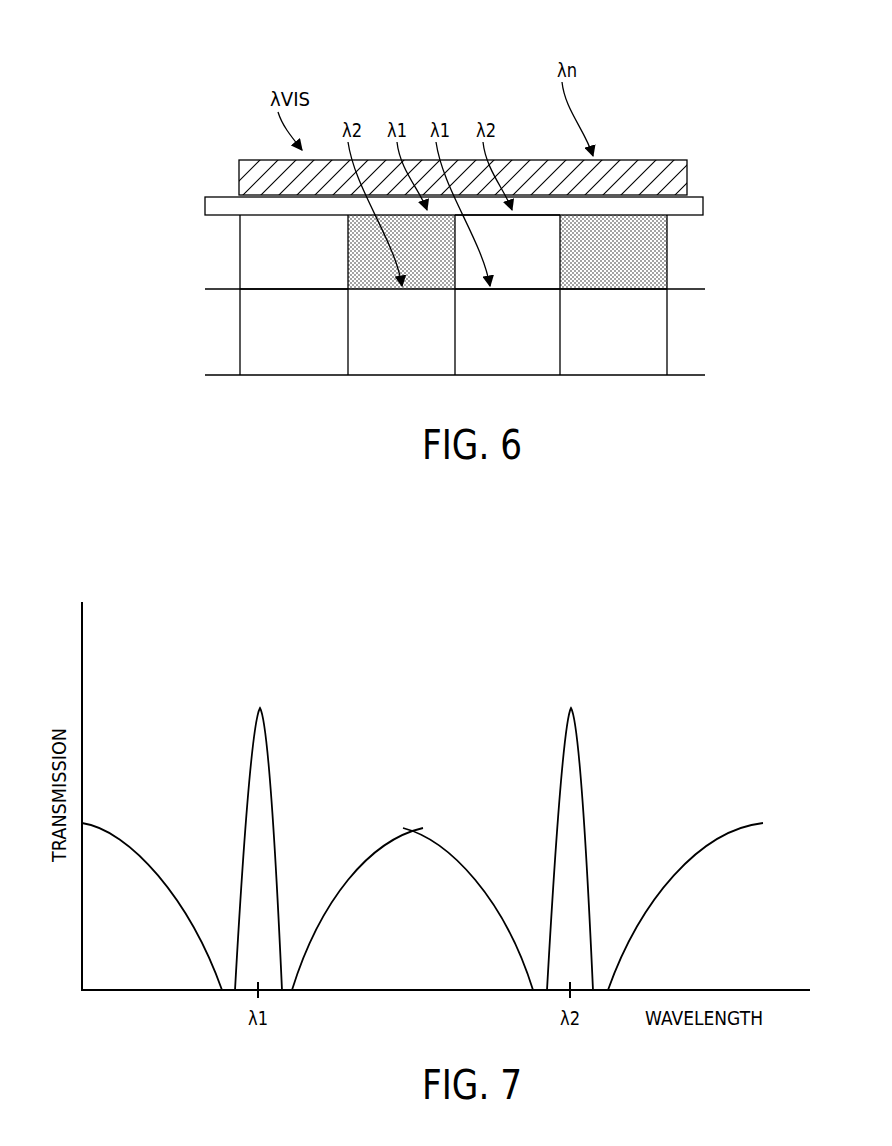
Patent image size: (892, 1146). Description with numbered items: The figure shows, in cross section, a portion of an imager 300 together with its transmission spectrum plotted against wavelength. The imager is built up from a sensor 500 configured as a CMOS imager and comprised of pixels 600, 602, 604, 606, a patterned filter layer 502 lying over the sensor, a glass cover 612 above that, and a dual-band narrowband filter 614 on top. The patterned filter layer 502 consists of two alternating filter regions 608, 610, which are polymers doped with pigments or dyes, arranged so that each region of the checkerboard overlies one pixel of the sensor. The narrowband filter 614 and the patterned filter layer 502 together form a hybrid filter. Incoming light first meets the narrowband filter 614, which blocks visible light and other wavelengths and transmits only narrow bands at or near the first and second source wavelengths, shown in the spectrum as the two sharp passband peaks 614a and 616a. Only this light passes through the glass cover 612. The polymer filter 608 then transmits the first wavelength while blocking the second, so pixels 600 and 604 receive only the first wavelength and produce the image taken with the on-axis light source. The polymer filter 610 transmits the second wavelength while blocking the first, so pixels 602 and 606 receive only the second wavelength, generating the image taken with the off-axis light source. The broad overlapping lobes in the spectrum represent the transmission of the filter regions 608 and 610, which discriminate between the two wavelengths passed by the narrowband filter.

In FIG. 6, the image sensor assembly 300 is at (651, 76).
In FIG. 6, the sensor 500 is at (202, 337).
In FIG. 6, the patterned filter layer 502 is at (202, 254).
In FIG. 6, the pixel 600 is at (281, 338).
In FIG. 6, the pixel 602 is at (387, 338).
In FIG. 6, the pixel 604 is at (491, 338).
In FIG. 6, the pixel 606 is at (596, 338).
In FIG. 6, the filter region 608 is at (491, 261).
In FIG. 7, the filter region 608 is at (459, 866).
In FIG. 6, the filter region 610 is at (596, 261).
In FIG. 7, the filter region 610 is at (142, 857).
In FIG. 6, the glass cover 612 is at (204, 192).
In FIG. 6, the dual-band narrowband filter 614 is at (246, 158).
In FIG. 7, the first passband peak 614a is at (290, 716).
In FIG. 7, the second passband peak 616a is at (590, 716).